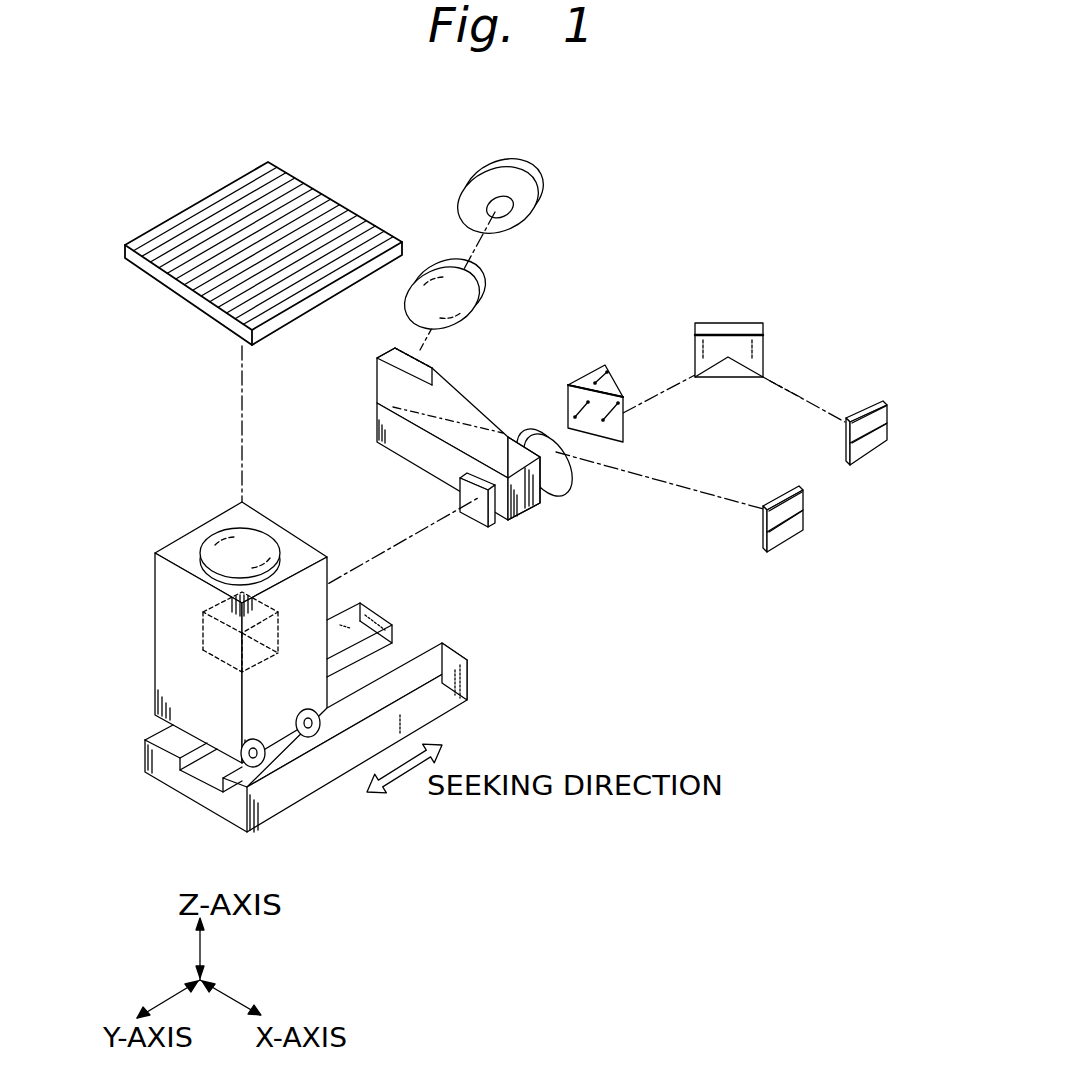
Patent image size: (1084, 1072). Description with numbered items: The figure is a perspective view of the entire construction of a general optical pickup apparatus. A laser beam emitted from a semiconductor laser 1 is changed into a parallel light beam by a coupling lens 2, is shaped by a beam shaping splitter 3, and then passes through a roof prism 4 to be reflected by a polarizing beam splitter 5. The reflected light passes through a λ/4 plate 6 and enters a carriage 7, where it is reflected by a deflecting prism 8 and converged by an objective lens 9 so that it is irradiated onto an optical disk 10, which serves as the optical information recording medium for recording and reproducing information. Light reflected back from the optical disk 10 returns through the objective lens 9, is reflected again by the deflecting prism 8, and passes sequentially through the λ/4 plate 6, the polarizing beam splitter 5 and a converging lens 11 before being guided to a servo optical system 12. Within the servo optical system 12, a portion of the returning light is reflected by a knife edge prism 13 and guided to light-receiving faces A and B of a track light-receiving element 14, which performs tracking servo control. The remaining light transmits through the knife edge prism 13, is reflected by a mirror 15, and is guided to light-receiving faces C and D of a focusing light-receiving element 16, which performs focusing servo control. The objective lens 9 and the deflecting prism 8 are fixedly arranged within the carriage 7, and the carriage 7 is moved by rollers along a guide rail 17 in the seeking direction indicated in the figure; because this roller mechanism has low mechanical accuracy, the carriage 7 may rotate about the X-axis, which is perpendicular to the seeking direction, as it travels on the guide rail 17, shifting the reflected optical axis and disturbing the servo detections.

The semiconductor laser 1 is at (517, 180).
The coupling lens 2 is at (426, 272).
The beam shaping splitter 3 is at (403, 348).
The roof prism 4 is at (460, 408).
The polarizing beam splitter 5 is at (531, 500).
The λ/4 plate 6 is at (480, 523).
The carriage 7 is at (167, 657).
The deflecting prism 8 is at (202, 620).
The objective lens 9 is at (222, 543).
The optical disk 10 is at (232, 190).
The converging lens 11 is at (545, 437).
The servo optical system 12 is at (797, 383).
The knife edge prism 13 is at (593, 370).
The track light-receiving element 14 is at (772, 553).
The mirror 15 is at (723, 322).
The focusing light-receiving element 16 is at (863, 460).
The guide rail 17 is at (427, 675).
The light-receiving face A is at (805, 503).
The light-receiving face B is at (795, 530).
The light-receiving face C is at (853, 418).
The light-receiving face D is at (883, 418).